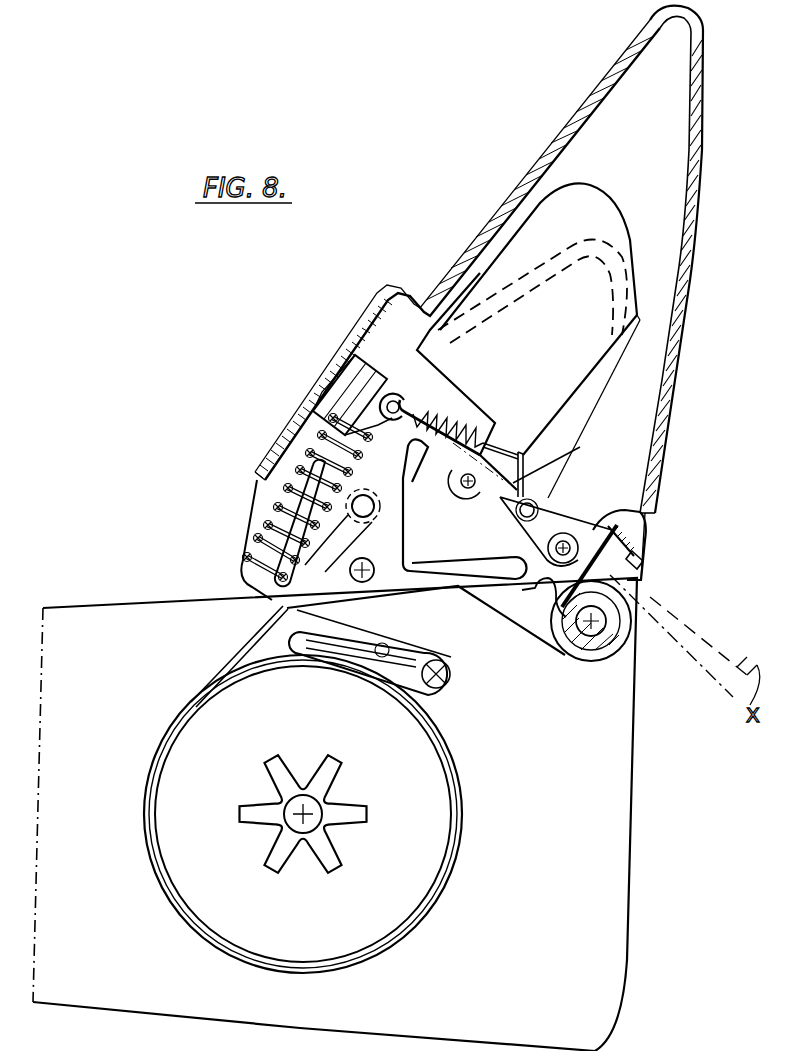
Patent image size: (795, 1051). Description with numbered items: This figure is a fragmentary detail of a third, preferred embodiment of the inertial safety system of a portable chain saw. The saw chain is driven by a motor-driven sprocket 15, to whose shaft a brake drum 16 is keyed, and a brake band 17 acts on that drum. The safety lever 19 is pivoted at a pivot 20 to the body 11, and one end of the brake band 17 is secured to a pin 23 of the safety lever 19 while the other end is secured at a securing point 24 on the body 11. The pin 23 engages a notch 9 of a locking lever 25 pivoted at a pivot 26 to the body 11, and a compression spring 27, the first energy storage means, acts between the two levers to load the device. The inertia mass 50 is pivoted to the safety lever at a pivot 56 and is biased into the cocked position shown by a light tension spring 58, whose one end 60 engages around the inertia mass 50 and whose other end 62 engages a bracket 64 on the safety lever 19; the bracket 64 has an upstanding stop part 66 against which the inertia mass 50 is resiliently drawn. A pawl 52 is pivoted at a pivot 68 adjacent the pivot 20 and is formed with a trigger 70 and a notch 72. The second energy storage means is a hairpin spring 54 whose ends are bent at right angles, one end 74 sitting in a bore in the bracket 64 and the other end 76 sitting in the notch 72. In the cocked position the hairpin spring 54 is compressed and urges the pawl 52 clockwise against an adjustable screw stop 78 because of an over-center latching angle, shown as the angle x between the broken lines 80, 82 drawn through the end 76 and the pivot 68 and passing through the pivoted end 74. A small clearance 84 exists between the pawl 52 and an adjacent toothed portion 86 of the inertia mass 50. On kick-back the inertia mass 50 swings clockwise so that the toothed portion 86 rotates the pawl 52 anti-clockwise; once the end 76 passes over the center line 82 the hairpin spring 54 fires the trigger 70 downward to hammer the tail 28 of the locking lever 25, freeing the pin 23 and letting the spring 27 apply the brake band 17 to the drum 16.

The notch 9 is at (379, 491).
The body 11 is at (645, 800).
The sprocket 15 is at (333, 855).
The brake drum 16 is at (420, 885).
The brake band 17 is at (222, 657).
The safety lever 19 is at (698, 150).
The pivot 20 is at (598, 640).
The pin 23 is at (374, 509).
The securing point 24 is at (456, 689).
The locking lever 25 is at (247, 578).
The pivot 26 is at (372, 582).
The compression spring 27 is at (254, 538).
The tail 28 is at (478, 580).
The inertia mass 50 is at (607, 207).
The pawl 52 is at (656, 511).
The hairpin spring 54 is at (603, 381).
The pivot 56 is at (458, 494).
The tension spring 58 is at (468, 414).
The spring end 60 is at (521, 449).
The spring end 62 is at (323, 390).
The bracket 64 is at (353, 372).
The stop part 66 is at (417, 372).
The pivot 68 is at (530, 588).
The trigger 70 is at (540, 497).
The notch 72 is at (553, 503).
The spring end 74 is at (458, 381).
The spring end 76 is at (516, 523).
The adjustable screw stop 78 is at (646, 560).
The broken line 80 is at (710, 638).
The broken line 82 is at (672, 643).
The clearance 84 is at (500, 496).
The toothed portion 86 is at (568, 460).